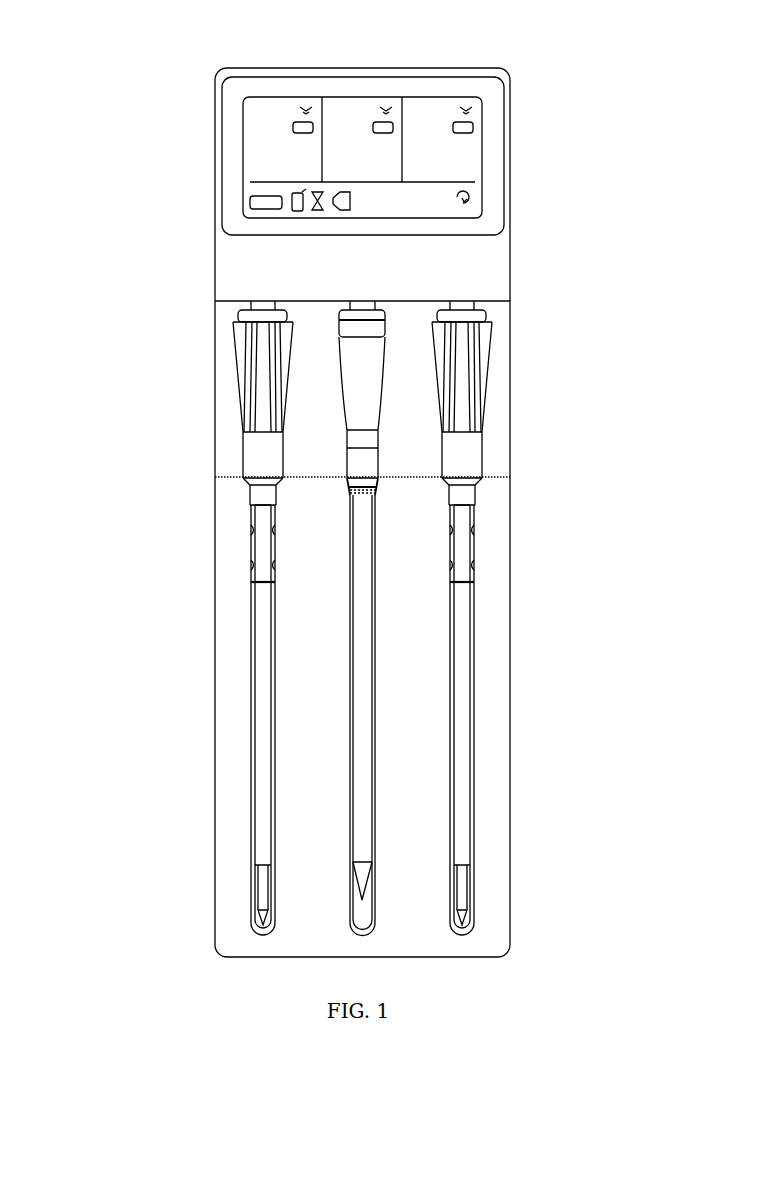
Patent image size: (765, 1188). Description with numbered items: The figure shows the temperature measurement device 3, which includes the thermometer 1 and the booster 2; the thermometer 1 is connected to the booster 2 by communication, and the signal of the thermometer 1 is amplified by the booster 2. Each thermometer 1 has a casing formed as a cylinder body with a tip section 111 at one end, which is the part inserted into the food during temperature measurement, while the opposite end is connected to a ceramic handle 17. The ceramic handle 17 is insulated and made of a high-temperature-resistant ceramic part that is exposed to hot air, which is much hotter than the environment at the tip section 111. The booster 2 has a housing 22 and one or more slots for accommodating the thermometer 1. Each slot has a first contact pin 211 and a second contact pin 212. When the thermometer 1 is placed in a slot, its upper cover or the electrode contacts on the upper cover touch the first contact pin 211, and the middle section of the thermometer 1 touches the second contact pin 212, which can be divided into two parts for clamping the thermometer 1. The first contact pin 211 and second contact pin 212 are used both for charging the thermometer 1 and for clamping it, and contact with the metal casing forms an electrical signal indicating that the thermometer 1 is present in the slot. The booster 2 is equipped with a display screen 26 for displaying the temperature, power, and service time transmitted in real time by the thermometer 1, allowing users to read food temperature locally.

The thermometer 1 is at (534, 584).
The tip section 111 is at (462, 897).
The ceramic handle 17 is at (487, 343).
The booster 2 is at (215, 705).
The first contact pin 211 is at (215, 300).
The second contact pin 212 is at (258, 537).
The housing 22 is at (230, 838).
The display screen 26 is at (247, 157).
The temperature measurement device 3 is at (527, 163).